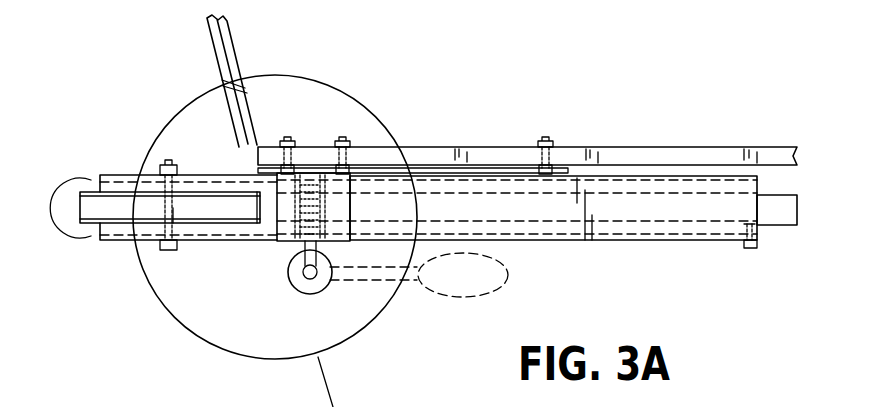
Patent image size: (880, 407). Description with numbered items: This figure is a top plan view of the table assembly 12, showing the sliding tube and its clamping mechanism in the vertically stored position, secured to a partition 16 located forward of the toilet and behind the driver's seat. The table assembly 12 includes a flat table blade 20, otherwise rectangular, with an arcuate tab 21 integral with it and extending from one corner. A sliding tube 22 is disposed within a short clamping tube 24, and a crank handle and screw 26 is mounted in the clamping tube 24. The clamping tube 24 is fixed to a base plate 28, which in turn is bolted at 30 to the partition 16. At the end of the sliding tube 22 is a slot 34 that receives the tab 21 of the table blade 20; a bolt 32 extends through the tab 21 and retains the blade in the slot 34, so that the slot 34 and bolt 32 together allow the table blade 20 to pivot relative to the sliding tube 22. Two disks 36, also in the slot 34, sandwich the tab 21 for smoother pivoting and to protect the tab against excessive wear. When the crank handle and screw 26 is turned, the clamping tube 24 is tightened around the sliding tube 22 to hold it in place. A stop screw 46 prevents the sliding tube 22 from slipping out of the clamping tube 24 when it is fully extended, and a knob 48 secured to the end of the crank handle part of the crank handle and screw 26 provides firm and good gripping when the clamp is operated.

The table assembly 12 is at (553, 262).
The partition 16 is at (650, 150).
The table blade 20 is at (783, 226).
The arcuate tab 21 is at (121, 208).
The sliding tube 22 is at (647, 242).
The clamping tube 24 is at (282, 248).
The crank handle and screw 26 is at (290, 250).
The base plate 28 is at (435, 168).
The bolt 30 is at (343, 138).
The bolt 32 is at (166, 250).
The slot 34 is at (213, 173).
The disks 36 is at (61, 208).
The stop screw 46 is at (748, 249).
The knob 48 is at (305, 296).